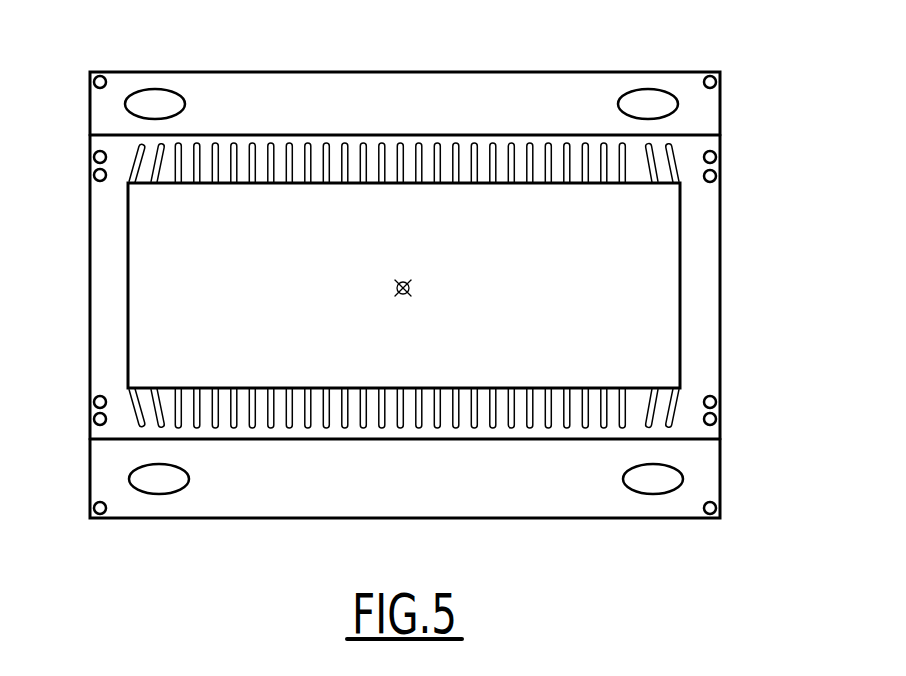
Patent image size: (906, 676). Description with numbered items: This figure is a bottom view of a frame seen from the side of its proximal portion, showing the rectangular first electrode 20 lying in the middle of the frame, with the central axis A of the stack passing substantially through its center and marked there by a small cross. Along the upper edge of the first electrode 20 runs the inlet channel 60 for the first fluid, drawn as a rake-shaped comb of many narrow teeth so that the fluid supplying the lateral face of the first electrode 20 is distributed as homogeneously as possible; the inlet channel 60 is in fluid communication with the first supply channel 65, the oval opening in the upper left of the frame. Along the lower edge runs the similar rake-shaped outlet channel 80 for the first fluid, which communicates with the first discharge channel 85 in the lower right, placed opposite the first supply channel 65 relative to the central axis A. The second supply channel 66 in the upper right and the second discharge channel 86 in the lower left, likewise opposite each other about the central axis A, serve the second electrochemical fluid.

The first electrode 20 is at (632, 307).
The inlet channel 60 is at (138, 167).
The outlet channel 80 is at (140, 408).
The first supply channel 65 is at (153, 105).
The second supply channel 66 is at (651, 105).
The first discharge channel 85 is at (657, 482).
The second discharge channel 86 is at (158, 480).
The central axis A is at (397, 288).